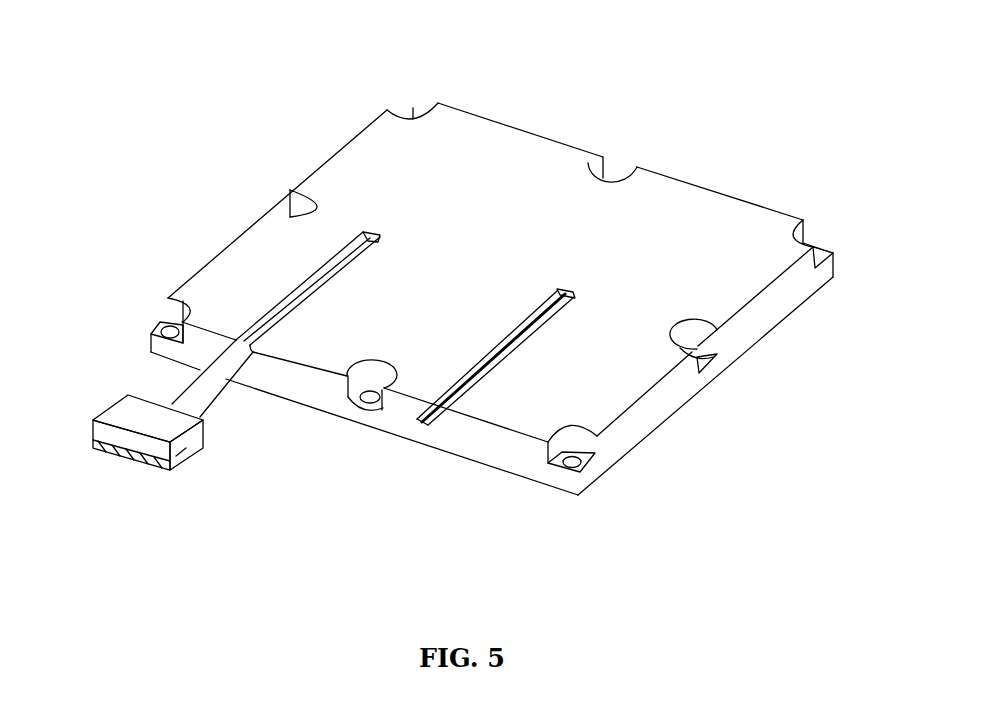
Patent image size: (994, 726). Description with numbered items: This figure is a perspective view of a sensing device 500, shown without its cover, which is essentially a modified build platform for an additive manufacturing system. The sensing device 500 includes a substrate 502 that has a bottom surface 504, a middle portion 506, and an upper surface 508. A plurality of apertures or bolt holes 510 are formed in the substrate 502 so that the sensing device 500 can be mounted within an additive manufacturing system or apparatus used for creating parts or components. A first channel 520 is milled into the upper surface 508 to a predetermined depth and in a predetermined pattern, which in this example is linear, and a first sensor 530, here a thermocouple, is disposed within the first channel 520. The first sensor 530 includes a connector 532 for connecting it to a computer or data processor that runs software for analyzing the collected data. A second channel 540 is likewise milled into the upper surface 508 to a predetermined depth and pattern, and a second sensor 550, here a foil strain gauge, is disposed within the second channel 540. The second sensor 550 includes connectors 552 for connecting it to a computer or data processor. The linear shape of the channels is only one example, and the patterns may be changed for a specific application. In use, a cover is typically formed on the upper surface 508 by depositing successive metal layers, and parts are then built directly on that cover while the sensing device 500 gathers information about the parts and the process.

The sensing device 500 is at (266, 90).
The substrate 502 is at (489, 277).
The bottom surface 504 is at (523, 458).
The middle portion 506 is at (643, 422).
The upper surface 508 is at (727, 217).
The apertures or bolt holes 510 is at (413, 108).
The first channel 520 is at (296, 297).
The first sensor 530 is at (366, 216).
The connector 532 is at (143, 470).
The second channel 540 is at (523, 327).
The second sensor 550 is at (561, 277).
The connectors 552 is at (418, 416).